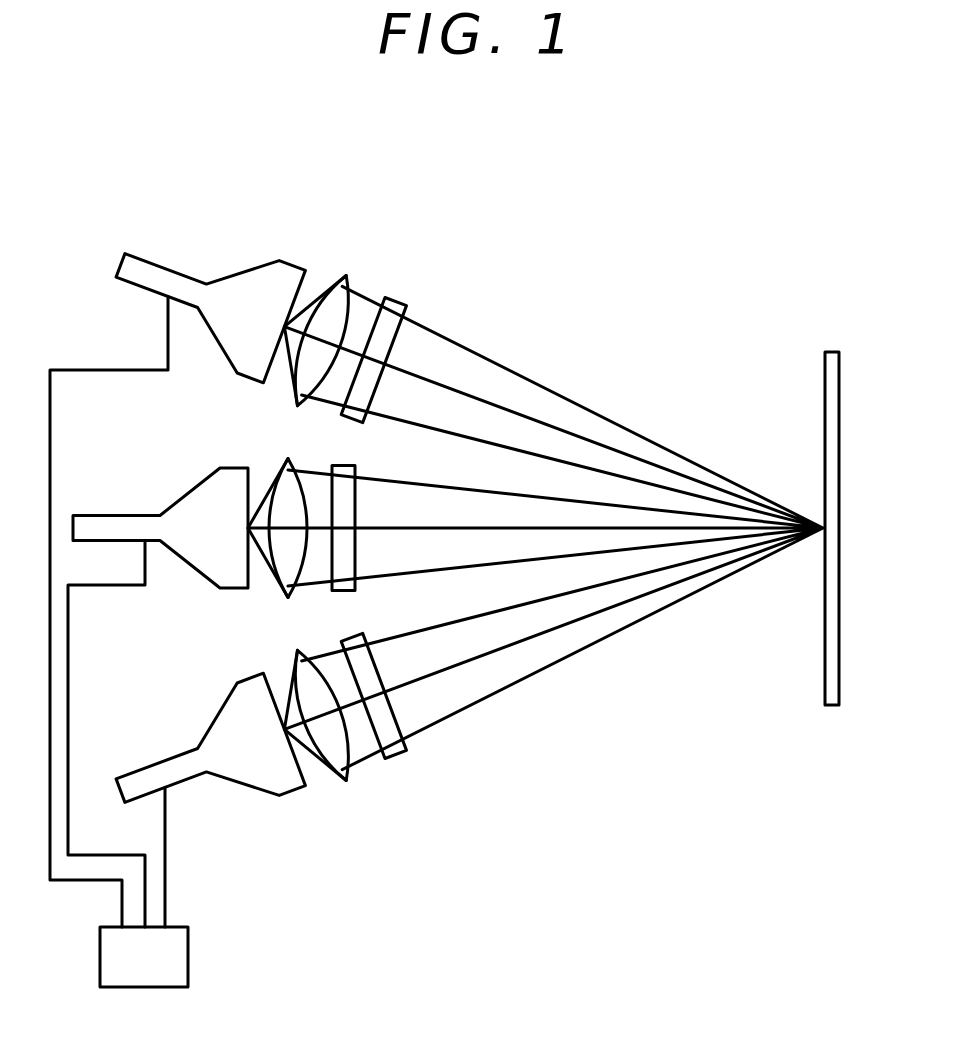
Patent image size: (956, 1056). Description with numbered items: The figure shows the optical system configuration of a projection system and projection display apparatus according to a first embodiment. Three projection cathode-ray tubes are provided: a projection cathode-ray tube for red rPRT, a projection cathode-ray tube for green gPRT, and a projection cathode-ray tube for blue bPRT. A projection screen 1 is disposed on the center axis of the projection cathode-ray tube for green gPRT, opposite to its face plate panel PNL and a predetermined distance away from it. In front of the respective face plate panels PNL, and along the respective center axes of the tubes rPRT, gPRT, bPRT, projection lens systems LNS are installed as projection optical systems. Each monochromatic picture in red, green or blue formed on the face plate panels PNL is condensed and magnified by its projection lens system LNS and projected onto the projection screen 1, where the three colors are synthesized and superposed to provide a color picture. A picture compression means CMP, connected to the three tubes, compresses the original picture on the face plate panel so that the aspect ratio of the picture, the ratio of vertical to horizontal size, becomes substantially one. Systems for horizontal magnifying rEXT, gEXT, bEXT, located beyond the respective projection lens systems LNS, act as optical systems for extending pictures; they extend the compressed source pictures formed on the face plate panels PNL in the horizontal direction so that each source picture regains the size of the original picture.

The projection cathode-ray tube for red rPRT is at (181, 280).
The projection cathode-ray tube for green gPRT is at (115, 520).
The projection cathode-ray tube for blue bPRT is at (163, 778).
The face plate panel PNL is at (305, 291).
The projection lens system LNS is at (335, 305).
The system for horizontal magnifying for red rEXT is at (388, 330).
The system for horizontal magnifying for green gEXT is at (345, 500).
The system for horizontal magnifying for blue bEXT is at (383, 716).
The projection screen 1 is at (826, 390).
The picture compression means CMP is at (188, 957).